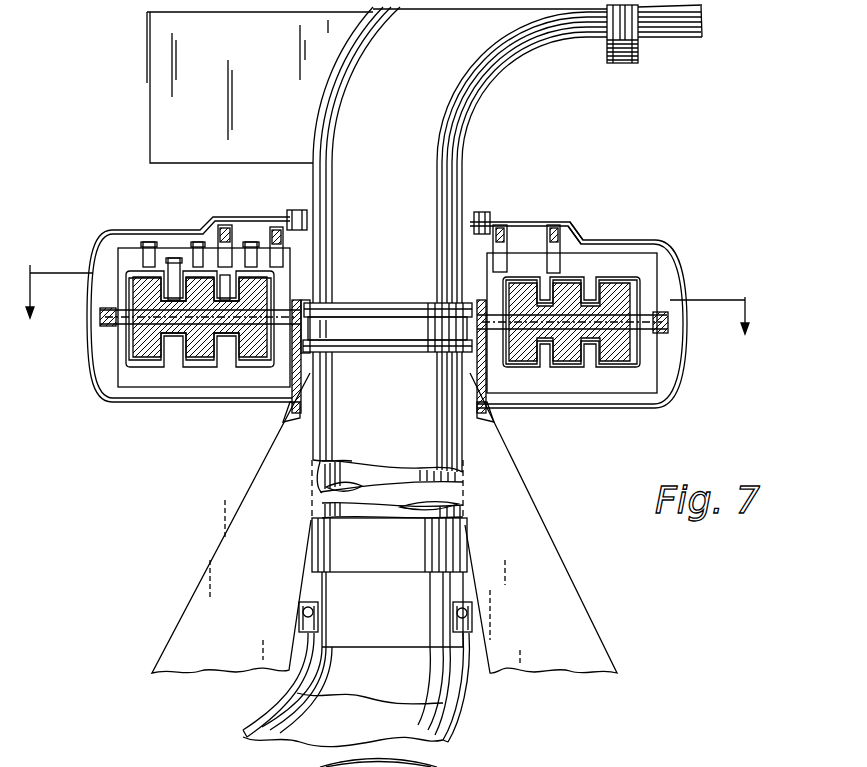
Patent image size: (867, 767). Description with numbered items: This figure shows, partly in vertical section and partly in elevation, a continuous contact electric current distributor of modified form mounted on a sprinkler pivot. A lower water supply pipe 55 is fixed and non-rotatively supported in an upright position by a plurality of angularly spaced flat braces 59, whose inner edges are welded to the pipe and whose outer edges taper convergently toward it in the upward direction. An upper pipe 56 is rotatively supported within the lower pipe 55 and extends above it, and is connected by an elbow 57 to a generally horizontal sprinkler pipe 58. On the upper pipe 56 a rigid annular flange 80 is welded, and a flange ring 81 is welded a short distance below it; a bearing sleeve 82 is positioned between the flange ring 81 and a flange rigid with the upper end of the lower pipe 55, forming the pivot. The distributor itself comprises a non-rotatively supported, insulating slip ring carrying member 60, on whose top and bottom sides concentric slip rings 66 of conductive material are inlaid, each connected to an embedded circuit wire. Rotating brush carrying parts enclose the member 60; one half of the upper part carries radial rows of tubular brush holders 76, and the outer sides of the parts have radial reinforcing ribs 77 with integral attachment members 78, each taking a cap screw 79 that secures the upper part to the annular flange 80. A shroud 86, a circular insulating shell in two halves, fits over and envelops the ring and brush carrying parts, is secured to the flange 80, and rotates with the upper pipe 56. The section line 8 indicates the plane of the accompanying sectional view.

The section line 8- 8 is at (399, 301).
The lower water supply pipe 55 is at (447, 438).
The upper pipe 56 is at (392, 239).
The elbow 57 is at (490, 78).
The sprinkler pipe 58 is at (677, 38).
The braces 59 is at (212, 577).
The slip ring carrying member 60 is at (630, 313).
The slip ring 66 is at (628, 292).
The tubular brush holders 76 is at (115, 243).
The radial reinforcing ribs 77 is at (140, 262).
The attachment members 78 is at (563, 247).
The cap screw 79 is at (577, 230).
The annular flange 80 is at (405, 347).
The flange ring 81 is at (358, 305).
The bearing sleeve 82 is at (363, 330).
The shroud 86 is at (678, 252).